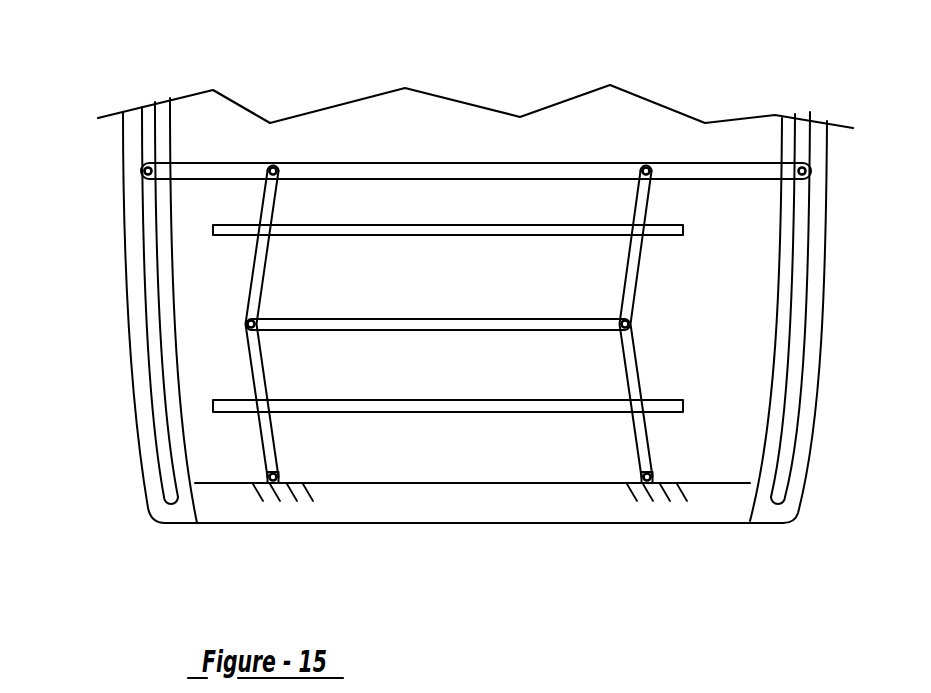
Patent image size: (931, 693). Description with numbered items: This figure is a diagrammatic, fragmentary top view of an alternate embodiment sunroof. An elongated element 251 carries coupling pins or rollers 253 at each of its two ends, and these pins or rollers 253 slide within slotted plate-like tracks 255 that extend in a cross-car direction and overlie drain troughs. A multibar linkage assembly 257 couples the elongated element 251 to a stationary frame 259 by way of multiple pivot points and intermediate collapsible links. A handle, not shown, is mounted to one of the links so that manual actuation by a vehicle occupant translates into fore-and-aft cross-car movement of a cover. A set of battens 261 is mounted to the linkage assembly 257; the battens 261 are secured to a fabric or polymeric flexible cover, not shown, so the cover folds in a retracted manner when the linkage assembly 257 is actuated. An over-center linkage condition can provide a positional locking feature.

The elongated element 251 is at (363, 172).
The coupling pins or rollers 253 is at (143, 172).
The slotted plate-like tracks 255 is at (145, 440).
The multibar linkage assembly 257 is at (648, 320).
The stationary frame 259 is at (462, 508).
The battens 261 is at (447, 228).